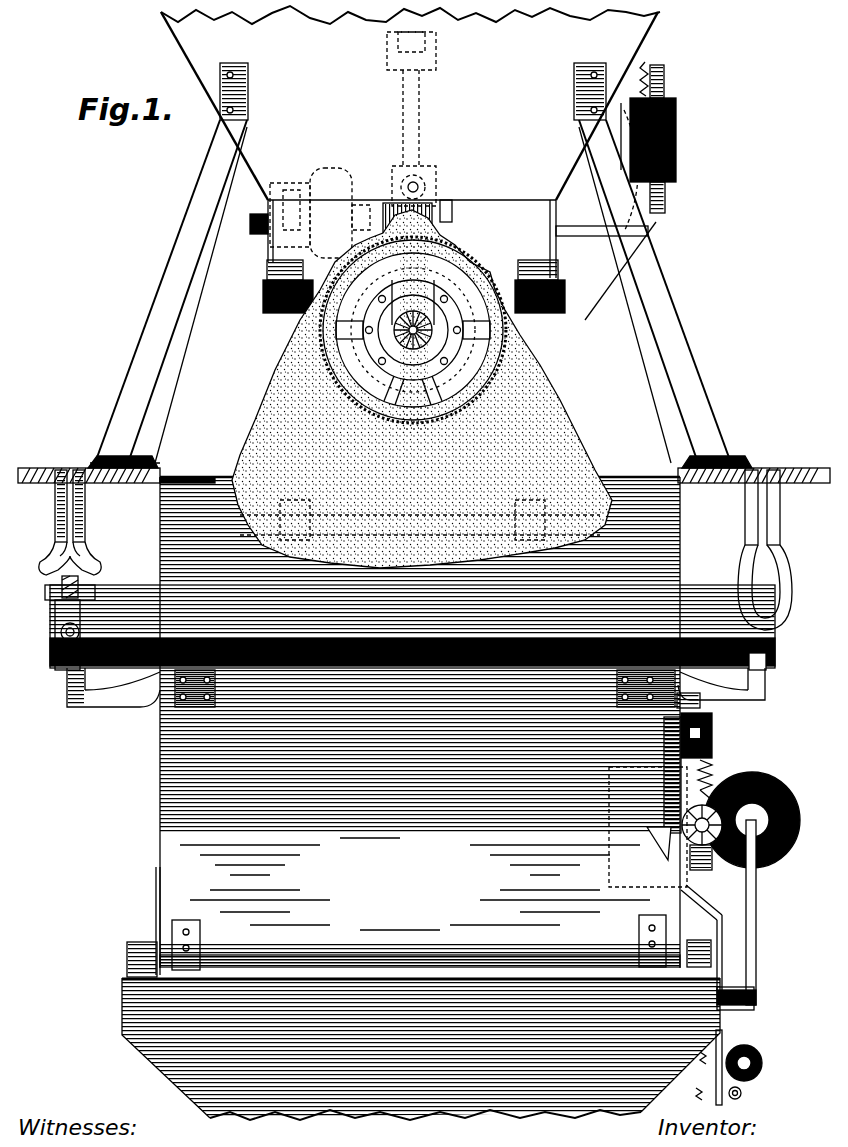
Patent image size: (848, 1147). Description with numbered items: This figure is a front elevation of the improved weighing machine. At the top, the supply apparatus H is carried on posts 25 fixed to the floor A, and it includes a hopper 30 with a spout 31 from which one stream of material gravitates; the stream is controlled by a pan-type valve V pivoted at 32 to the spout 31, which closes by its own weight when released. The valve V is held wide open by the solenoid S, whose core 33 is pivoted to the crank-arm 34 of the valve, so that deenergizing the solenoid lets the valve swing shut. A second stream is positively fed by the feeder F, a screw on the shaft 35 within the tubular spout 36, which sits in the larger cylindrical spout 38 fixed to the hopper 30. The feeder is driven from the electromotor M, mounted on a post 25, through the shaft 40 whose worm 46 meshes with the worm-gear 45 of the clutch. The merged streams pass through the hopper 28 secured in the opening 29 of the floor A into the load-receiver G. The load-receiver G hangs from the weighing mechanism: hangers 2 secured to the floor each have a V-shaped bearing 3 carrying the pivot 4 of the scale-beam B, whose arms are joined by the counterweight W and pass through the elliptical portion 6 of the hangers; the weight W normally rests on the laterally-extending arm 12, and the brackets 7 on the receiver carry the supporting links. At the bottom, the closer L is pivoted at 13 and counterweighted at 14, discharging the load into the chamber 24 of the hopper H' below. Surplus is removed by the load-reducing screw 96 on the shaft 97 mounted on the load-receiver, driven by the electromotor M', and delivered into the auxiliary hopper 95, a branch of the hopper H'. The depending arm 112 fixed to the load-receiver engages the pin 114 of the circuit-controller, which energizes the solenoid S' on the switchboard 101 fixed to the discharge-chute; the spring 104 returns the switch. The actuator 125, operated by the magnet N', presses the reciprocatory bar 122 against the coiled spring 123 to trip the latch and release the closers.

The hopper 30 is at (193, 47).
The supply apparatus H is at (410, 134).
The posts 25 is at (165, 294).
The solenoid S is at (658, 147).
The core 33 is at (666, 196).
The crank-arm 34 is at (626, 258).
The spout 31 is at (537, 253).
The electromotor M is at (320, 194).
The feed shaft N is at (425, 119).
The worm 46 is at (428, 205).
The shaft 40 is at (452, 216).
The pivot 32 is at (258, 228).
The valve V is at (263, 290).
The load-receiver G is at (420, 722).
The worm-gear 45 is at (327, 347).
The feeder F is at (413, 333).
The shaft 35 is at (405, 340).
The tubular spout 36 is at (445, 335).
The cylindrical spout 38 is at (432, 338).
The floor A is at (38, 464).
The hopper 28 is at (190, 480).
The opening 29 is at (160, 486).
The hangers 2 is at (56, 506).
The elliptical portion 6 is at (56, 556).
The pivot 4 is at (86, 592).
The V-shaped bearing 3 is at (50, 607).
The scale-beam B is at (55, 618).
The counterweight W is at (268, 598).
The brackets 7 is at (770, 686).
The laterally-extending arm 12 is at (162, 708).
The actuator 125 is at (700, 700).
The magnet N' is at (713, 735).
The depending arm 112 is at (660, 750).
The reciprocatory bar 122 is at (712, 758).
The coiled spring 123 is at (712, 777).
The electromotor M' is at (752, 832).
The screw 96 is at (691, 848).
The shaft 97 is at (681, 832).
The pin 114 is at (682, 840).
The auxiliary hopper 95 is at (748, 947).
The counterweight 14 is at (131, 941).
The closer-pivot 13 is at (246, 962).
The closer L is at (338, 977).
The discharge-hopper H' is at (425, 1097).
The chamber 24 is at (458, 1112).
The switchboard 101 is at (720, 1058).
The solenoid S' is at (751, 1056).
The spring 104 is at (742, 1092).